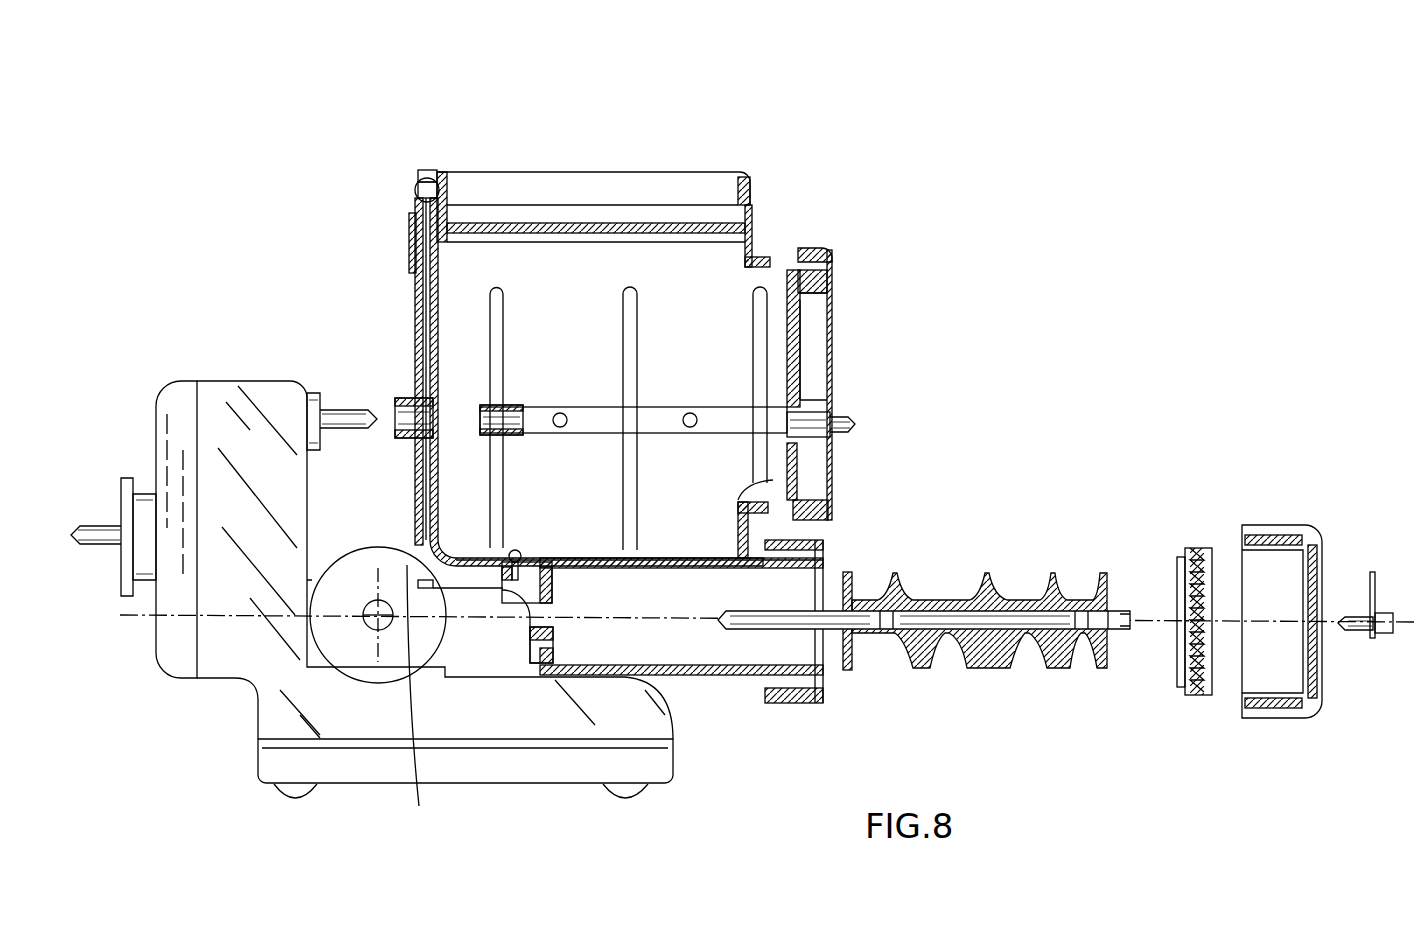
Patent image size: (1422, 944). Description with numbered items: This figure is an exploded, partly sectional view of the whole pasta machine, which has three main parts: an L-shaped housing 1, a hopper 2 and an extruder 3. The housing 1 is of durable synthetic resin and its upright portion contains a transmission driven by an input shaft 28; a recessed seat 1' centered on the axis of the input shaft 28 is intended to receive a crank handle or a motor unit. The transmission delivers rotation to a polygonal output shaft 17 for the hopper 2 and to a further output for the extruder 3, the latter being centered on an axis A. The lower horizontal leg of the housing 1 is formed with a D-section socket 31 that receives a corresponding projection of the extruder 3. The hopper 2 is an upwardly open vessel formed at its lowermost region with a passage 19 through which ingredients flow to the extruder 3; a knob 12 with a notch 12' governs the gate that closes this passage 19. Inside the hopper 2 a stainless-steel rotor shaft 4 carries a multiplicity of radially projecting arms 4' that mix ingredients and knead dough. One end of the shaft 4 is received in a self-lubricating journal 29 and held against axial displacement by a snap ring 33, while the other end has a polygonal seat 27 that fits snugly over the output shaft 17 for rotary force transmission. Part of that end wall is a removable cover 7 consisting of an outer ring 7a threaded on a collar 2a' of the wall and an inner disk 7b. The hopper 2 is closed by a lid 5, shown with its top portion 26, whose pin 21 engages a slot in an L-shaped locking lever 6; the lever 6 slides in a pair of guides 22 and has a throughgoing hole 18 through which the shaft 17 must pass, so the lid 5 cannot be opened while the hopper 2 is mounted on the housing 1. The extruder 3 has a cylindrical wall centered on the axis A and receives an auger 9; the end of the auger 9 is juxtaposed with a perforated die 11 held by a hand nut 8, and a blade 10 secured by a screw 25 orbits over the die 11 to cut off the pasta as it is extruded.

The housing 1 is at (435, 589).
The recessed seat 1' is at (157, 529).
The hopper 2 is at (758, 225).
The collar 2a' is at (787, 230).
The extruder 3 is at (829, 538).
The rotor shaft 4 is at (633, 402).
The arms 4' is at (628, 412).
The lid 5 is at (757, 177).
The locking lever 6 is at (412, 303).
The removable cover 7 is at (803, 378).
The outer ring 7a is at (830, 256).
The inner disk 7b is at (800, 325).
The hand nut 8 is at (1251, 710).
The auger 9 is at (946, 668).
The blade 10 is at (1367, 640).
The perforated die 11 is at (1176, 692).
The knob 12 is at (314, 691).
The notch 12' is at (425, 699).
The output shaft 17 is at (335, 408).
The throughgoing hole 18 is at (395, 414).
The passage 19 is at (601, 564).
The pin 21 is at (407, 184).
The guides 22 is at (410, 238).
The screw 25 is at (1380, 614).
The lid 26 is at (591, 215).
The polygonal seat 27 is at (510, 415).
The input shaft 28 is at (105, 535).
The journal 29 is at (822, 416).
The socket 31 is at (500, 655).
The snap ring 33 is at (834, 440).
The axis A is at (1403, 627).